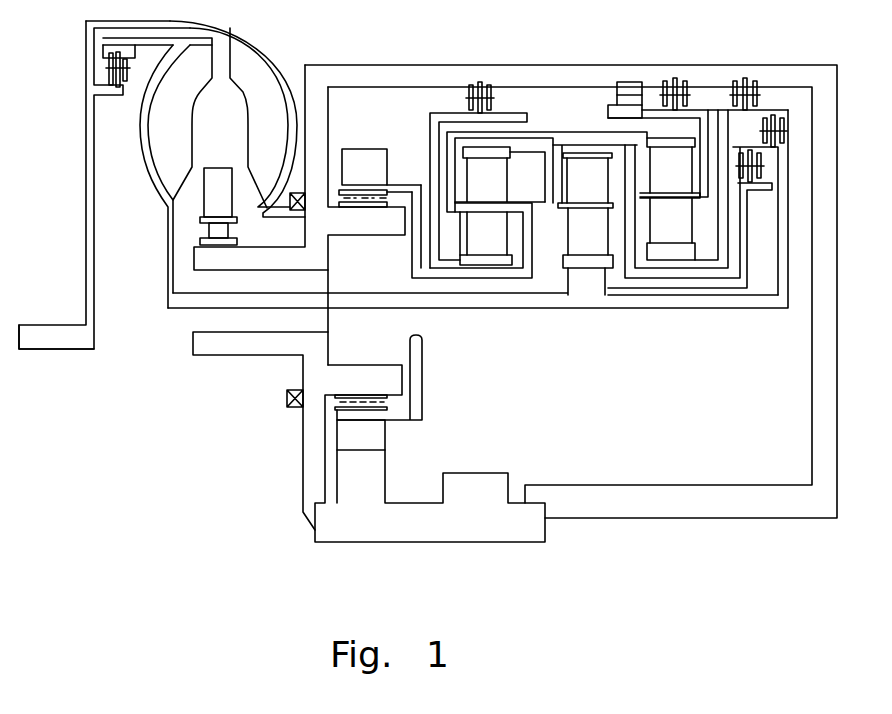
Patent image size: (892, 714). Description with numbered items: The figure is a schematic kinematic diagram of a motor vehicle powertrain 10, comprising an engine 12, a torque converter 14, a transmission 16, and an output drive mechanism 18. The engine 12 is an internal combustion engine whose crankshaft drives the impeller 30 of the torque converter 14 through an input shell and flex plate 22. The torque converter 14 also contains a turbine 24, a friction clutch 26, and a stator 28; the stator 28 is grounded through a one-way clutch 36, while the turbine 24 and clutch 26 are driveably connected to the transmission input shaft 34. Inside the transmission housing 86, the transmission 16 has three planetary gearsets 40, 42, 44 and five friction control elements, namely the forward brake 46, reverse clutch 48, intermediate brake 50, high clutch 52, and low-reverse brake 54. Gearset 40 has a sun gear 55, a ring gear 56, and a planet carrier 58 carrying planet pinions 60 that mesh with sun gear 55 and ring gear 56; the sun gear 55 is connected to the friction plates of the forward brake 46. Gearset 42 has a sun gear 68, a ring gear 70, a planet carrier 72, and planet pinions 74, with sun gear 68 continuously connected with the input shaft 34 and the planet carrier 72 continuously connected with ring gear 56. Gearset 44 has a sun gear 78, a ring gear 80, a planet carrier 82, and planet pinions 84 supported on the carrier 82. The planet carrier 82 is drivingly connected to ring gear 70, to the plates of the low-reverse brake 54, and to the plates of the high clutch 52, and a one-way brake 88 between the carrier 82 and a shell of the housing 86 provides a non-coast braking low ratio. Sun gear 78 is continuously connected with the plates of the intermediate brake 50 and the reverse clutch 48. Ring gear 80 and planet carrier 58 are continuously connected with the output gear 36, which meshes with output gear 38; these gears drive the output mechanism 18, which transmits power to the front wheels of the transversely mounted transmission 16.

The powertrain 10 is at (159, 409).
The engine 12 is at (47, 328).
The torque converter 14 is at (281, 47).
The transmission 16 is at (707, 347).
The output drive mechanism 18 is at (458, 451).
The input shell and flex plate 22 is at (92, 224).
The turbine 24 is at (178, 140).
The friction clutch 26 is at (125, 68).
The stator 28 is at (232, 202).
The impeller 30 is at (280, 136).
The transmission input shaft 34 is at (244, 423).
The one-way clutch / output gear 36 is at (210, 232).
The output gear 38 is at (368, 490).
The planetary gearset 40 is at (402, 262).
The planetary gearset 42 is at (547, 270).
The planetary gearset 44 is at (642, 227).
The forward brake 46 is at (468, 100).
The reverse clutch 48 is at (778, 128).
The intermediate brake 50 is at (755, 95).
The high clutch 52 is at (760, 167).
The low-reverse brake 54 is at (687, 95).
The sun gear 55 is at (493, 258).
The ring gear 56 is at (502, 153).
The planet carrier 58 is at (465, 205).
The planet pinions 60 is at (499, 195).
The sun gear 68 is at (475, 251).
The ring gear 70 is at (580, 152).
The planet carrier 72 is at (558, 208).
The planet pinions 74 is at (597, 195).
The sun gear 78 is at (687, 255).
The ring gear 80 is at (663, 137).
The planet carrier 82 is at (698, 198).
The planet pinions 84 is at (681, 180).
The transmission housing 86 is at (837, 365).
The one-way brake 88 is at (627, 95).